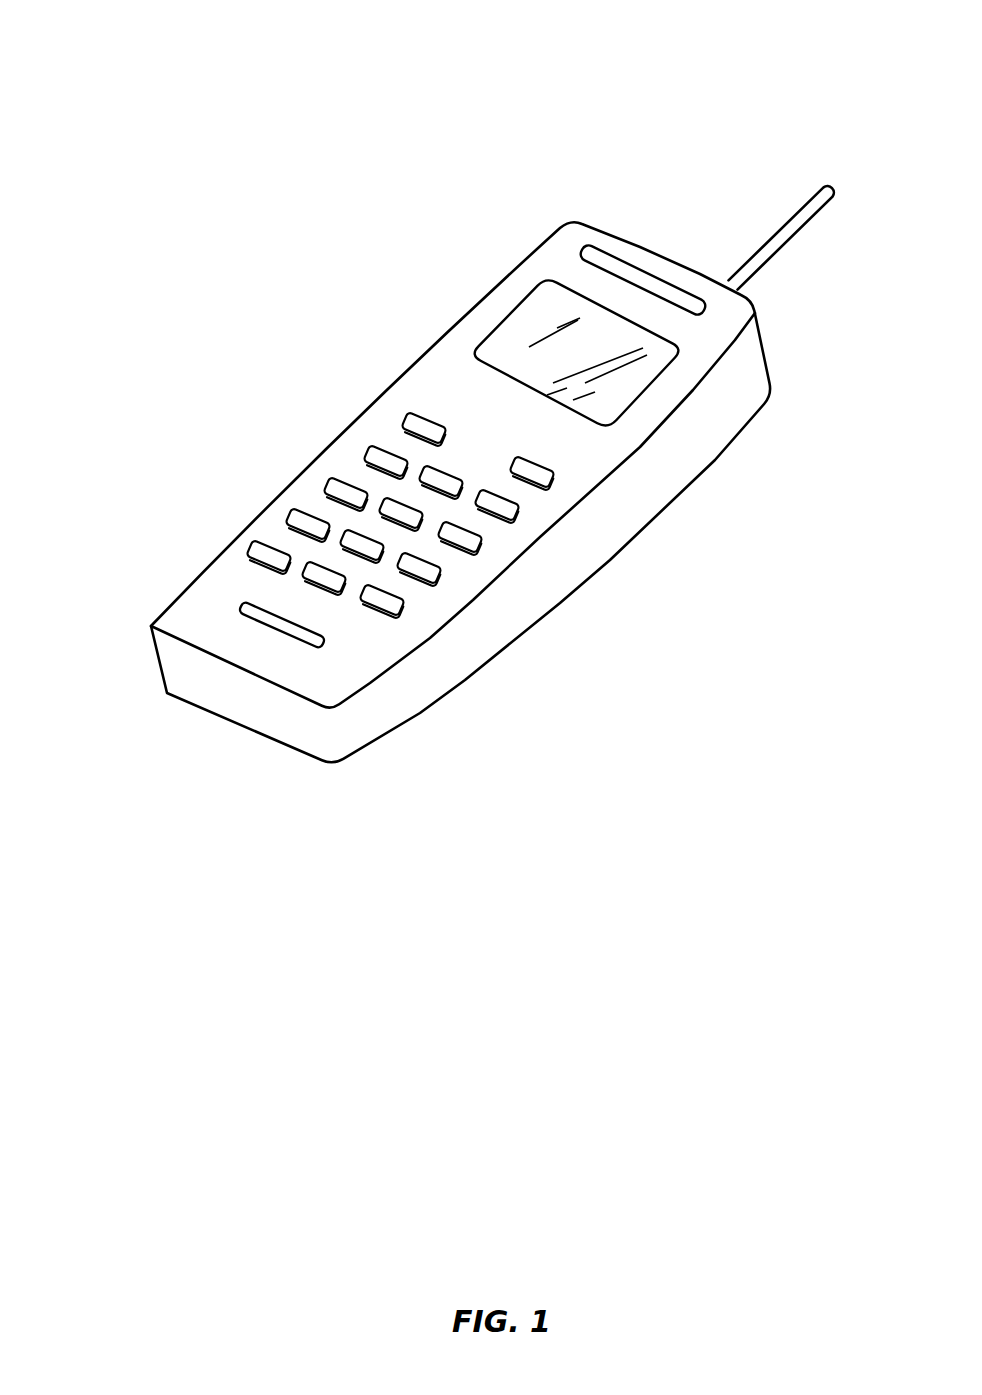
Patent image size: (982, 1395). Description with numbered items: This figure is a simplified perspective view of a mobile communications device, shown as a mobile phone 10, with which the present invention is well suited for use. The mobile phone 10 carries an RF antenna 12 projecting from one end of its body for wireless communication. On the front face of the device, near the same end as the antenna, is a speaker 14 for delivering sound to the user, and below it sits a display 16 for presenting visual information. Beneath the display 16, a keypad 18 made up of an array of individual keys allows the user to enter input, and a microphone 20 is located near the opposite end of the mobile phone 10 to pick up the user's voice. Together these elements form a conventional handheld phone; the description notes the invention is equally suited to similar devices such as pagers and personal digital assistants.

The mobile phone 10 is at (591, 124).
The RF antenna 12 is at (755, 260).
The speaker 14 is at (603, 265).
The display 16 is at (517, 337).
The keypad 18 is at (472, 579).
The microphone 20 is at (267, 618).